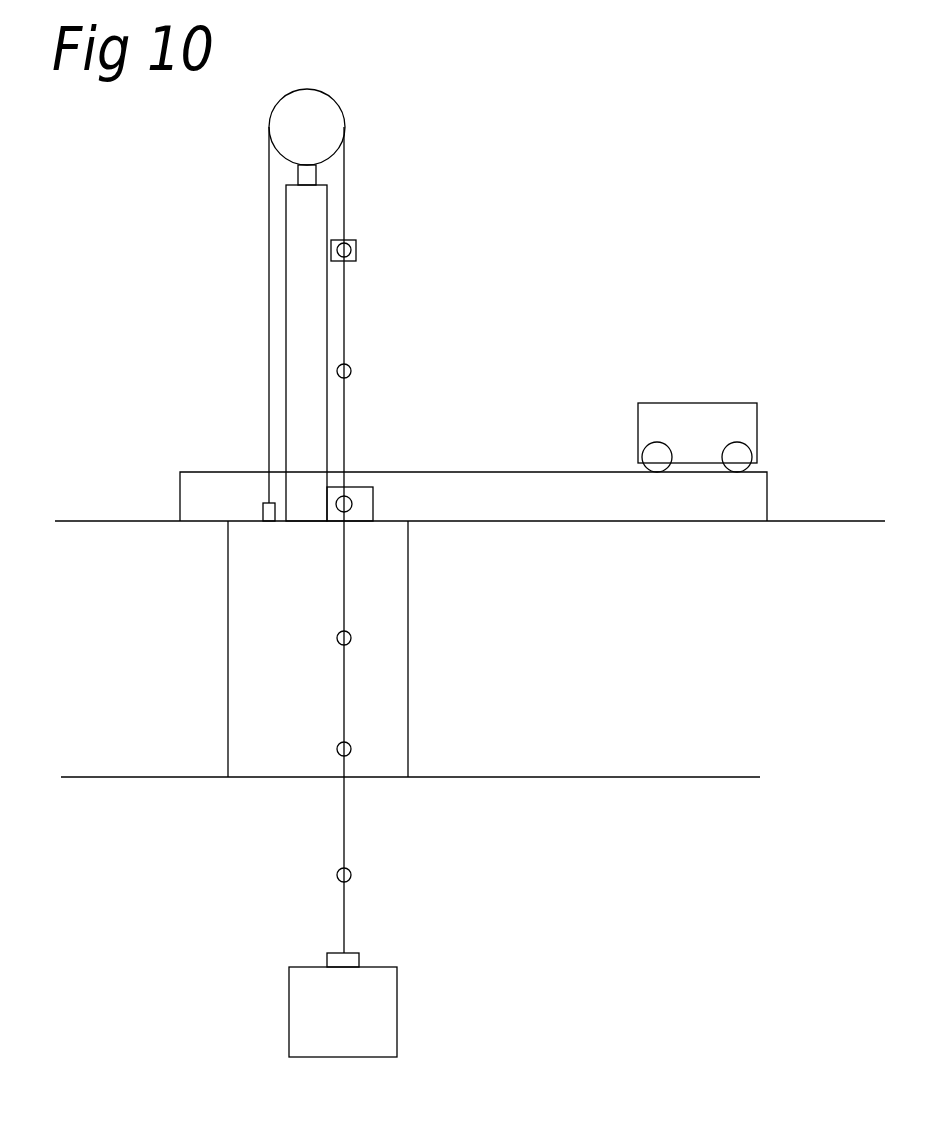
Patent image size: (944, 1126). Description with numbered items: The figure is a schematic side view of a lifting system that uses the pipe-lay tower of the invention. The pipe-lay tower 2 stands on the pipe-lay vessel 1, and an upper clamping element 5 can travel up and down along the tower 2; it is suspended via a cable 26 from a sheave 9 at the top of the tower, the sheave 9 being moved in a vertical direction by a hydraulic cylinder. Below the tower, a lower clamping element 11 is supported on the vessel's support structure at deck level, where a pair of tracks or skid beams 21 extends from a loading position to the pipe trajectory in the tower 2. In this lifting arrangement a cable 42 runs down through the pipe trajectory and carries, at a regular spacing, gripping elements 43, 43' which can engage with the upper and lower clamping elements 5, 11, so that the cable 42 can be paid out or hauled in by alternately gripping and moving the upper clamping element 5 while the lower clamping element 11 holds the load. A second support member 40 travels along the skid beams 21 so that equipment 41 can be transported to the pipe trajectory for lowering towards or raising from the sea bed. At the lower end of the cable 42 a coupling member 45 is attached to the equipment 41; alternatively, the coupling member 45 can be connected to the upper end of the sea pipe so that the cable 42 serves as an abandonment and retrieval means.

The pipe-lay vessel 1 is at (636, 728).
The pipe-lay tower 2 is at (236, 228).
The upper clamping element 5 is at (357, 260).
The sheave 9 is at (313, 117).
The lower clamping element 11 is at (360, 500).
The skid beams 21 is at (740, 495).
The cable 26 is at (268, 372).
The second support member 40 is at (725, 418).
The equipment 41 is at (366, 1030).
The cable 42 is at (341, 585).
The gripping element 43 is at (400, 752).
The gripping element 43' is at (403, 863).
The coupling member 45 is at (330, 956).